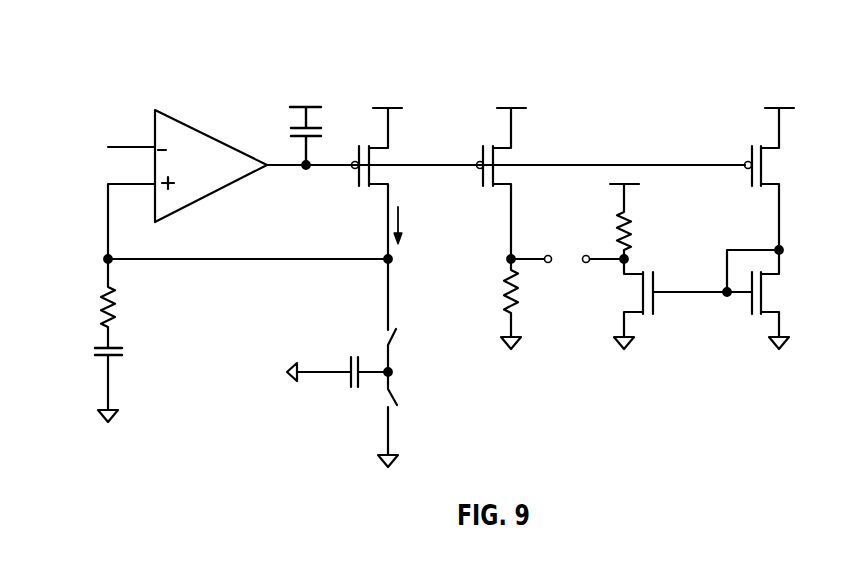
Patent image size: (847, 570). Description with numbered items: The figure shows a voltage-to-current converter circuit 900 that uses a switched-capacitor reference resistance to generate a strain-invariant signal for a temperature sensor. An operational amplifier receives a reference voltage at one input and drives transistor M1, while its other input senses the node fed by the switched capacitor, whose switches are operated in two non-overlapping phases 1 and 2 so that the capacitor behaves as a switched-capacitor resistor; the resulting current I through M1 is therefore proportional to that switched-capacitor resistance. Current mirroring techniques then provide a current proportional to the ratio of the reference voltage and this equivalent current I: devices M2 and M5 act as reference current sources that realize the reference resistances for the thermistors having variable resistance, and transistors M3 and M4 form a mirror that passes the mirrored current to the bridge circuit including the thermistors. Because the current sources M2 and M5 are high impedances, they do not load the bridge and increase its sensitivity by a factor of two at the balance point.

The voltage-to-current converter circuit 900 is at (99, 78).
The transistor M1 is at (387, 183).
The device M2 is at (512, 183).
The transistor M3 is at (774, 190).
The transistor M4 is at (777, 310).
The device M5 is at (627, 304).
The switch phase phi1 1 is at (380, 419).
The switch phase phi2 2 is at (379, 315).